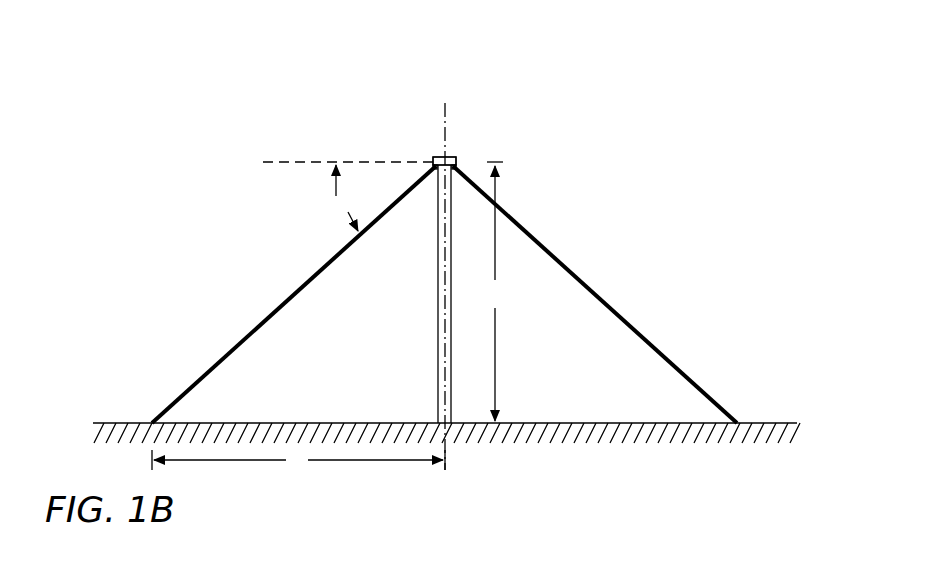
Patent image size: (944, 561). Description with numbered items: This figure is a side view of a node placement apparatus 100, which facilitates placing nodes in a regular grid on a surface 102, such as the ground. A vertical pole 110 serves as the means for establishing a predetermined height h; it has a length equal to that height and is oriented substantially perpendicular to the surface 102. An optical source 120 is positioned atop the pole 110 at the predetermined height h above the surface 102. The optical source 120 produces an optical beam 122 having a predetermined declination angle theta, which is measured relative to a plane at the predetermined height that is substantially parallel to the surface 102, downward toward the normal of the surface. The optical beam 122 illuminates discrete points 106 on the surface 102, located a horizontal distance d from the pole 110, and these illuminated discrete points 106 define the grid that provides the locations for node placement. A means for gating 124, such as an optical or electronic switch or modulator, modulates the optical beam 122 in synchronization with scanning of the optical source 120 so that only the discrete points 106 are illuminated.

The node placement apparatus 100 is at (648, 109).
The surface 102 is at (757, 423).
The discrete points 106 is at (150, 412).
The vertical pole 110 is at (438, 352).
The optical source 120 is at (452, 158).
The optical beam 122 is at (315, 271).
The means for gating 124 is at (437, 156).